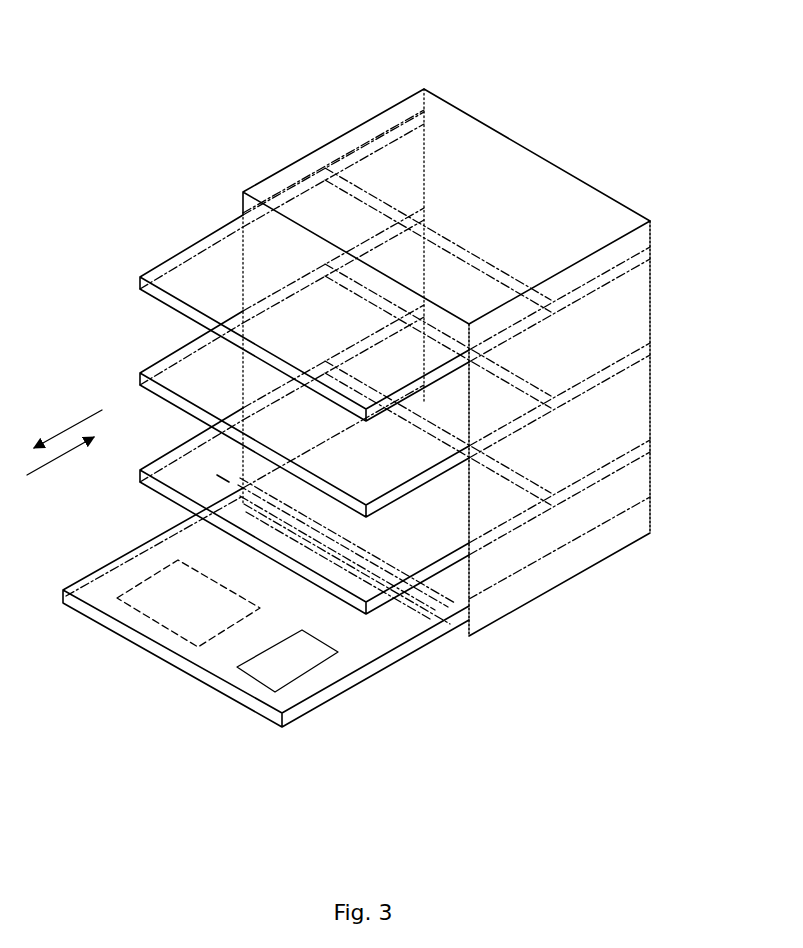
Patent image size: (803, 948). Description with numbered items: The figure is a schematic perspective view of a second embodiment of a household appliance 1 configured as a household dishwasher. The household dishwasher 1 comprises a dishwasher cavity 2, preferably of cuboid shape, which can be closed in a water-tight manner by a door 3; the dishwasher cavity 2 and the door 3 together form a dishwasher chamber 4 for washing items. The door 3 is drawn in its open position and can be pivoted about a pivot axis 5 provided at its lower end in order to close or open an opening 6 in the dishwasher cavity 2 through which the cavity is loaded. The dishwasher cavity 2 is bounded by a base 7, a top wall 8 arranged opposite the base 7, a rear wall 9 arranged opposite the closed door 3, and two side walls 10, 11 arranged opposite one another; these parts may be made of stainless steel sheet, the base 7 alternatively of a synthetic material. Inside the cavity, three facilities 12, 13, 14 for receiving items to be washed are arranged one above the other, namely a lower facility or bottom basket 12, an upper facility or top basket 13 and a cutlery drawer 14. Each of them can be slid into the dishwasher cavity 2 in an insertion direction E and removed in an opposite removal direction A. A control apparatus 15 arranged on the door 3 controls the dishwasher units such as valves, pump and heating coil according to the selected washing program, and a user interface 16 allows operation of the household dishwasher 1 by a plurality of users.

The household appliance 1 is at (278, 87).
The dishwasher cavity 2 is at (268, 170).
The door 3 is at (137, 560).
The dishwasher chamber 4 is at (447, 419).
The pivot axis 5 is at (470, 627).
The opening 6 is at (452, 575).
The base 7 is at (553, 543).
The top wall 8 is at (470, 127).
The rear wall 9 is at (567, 182).
The side wall 10 is at (343, 160).
The side wall 11 is at (630, 322).
The facility for receiving items to be washed 12 is at (163, 470).
The facility for receiving items to be washed 13 is at (165, 373).
The facility for receiving items to be washed 14 is at (197, 264).
The control apparatus 15 is at (297, 678).
The user interface 16 is at (157, 618).
The removal direction A is at (68, 426).
The insertion direction E is at (60, 464).